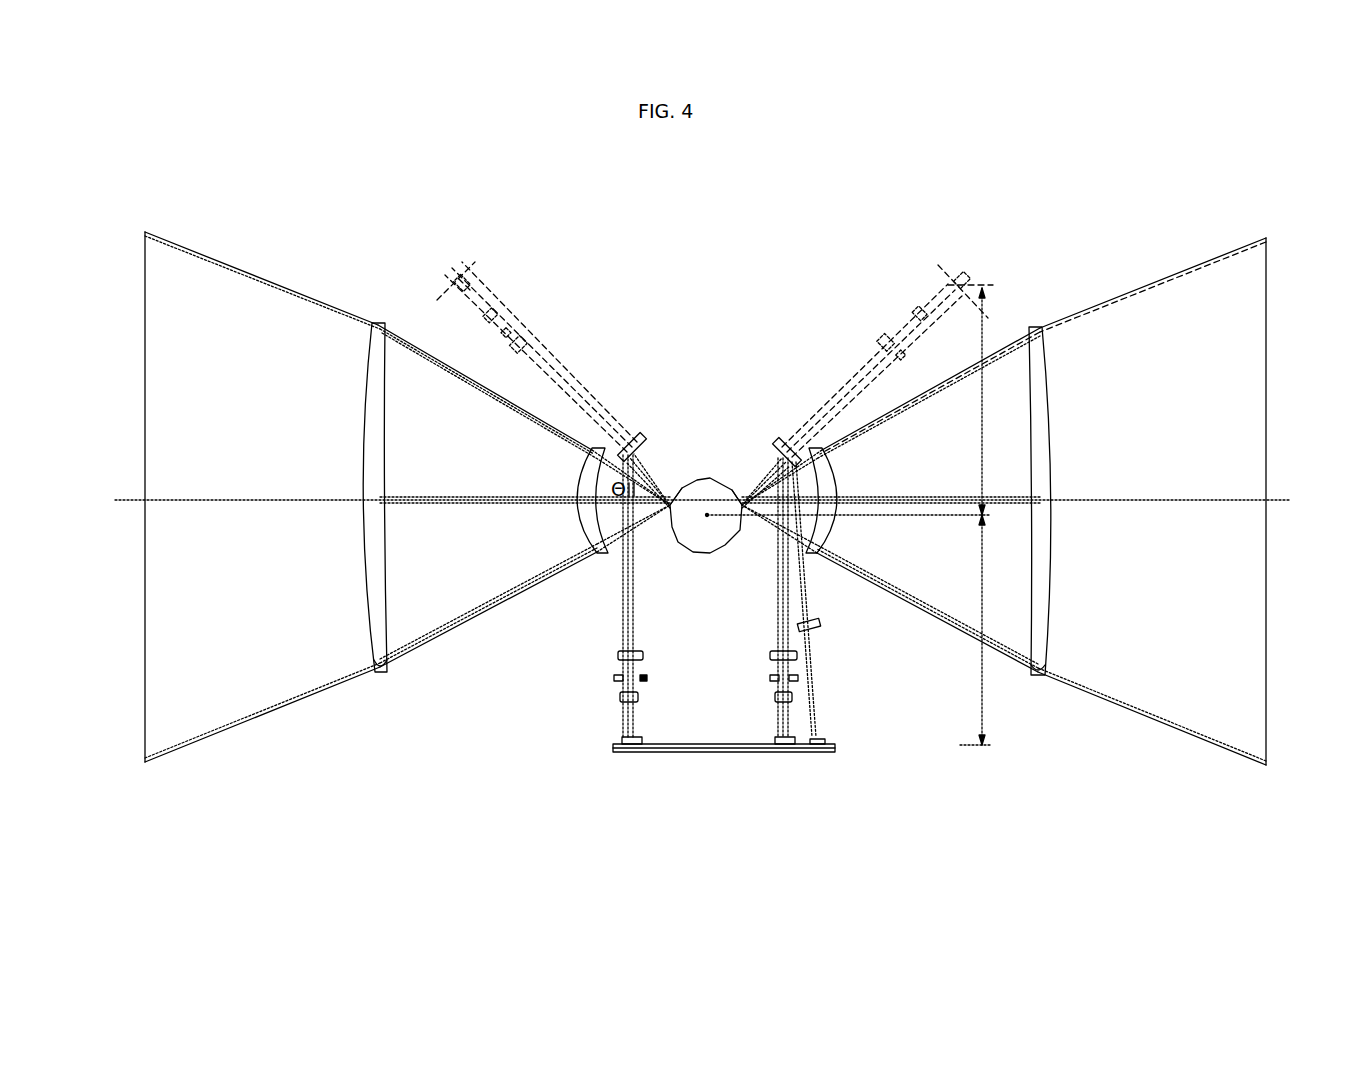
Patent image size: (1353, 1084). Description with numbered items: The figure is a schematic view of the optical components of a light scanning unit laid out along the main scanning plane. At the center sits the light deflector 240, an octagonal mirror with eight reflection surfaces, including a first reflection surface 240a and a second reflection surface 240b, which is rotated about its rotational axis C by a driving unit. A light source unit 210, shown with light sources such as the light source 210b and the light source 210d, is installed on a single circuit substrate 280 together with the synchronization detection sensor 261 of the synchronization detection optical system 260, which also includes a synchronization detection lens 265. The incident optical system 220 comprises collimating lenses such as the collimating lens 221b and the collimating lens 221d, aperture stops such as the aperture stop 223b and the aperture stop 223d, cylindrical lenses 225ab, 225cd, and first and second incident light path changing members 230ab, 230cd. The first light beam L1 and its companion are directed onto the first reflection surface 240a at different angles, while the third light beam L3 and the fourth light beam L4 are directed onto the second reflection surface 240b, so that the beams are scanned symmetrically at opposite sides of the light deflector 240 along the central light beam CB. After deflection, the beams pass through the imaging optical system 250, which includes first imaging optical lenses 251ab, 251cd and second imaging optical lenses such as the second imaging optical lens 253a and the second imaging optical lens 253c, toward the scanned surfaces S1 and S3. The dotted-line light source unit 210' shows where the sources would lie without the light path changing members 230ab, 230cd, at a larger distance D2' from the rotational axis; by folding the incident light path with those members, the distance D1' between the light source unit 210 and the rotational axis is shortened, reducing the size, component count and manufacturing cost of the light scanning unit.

The light source unit 210 is at (660, 810).
The light source unit (without incident light path changing members) 210' is at (715, 342).
The second light source 210b is at (610, 738).
The fourth light source 210d is at (758, 753).
The incident optical system 220 is at (518, 732).
The collimating lens 221b is at (618, 697).
The collimating lens 221d is at (794, 697).
The aperture stop 223b is at (612, 678).
The aperture stop 223d is at (800, 678).
The cylindrical lens 225ab is at (616, 654).
The cylindrical lens 225cd is at (800, 655).
The first incident light path changing member 230ab is at (632, 440).
The second incident light path changing member 230cd is at (785, 440).
The light deflector 240 is at (700, 552).
The first reflection surface 240a is at (688, 482).
The second reflection surface 240b is at (736, 480).
The imaging optical system 250 is at (366, 752).
The first imaging optical lens 251ab is at (578, 462).
The first imaging optical lens 251cd is at (838, 470).
The second imaging optical lens 253a is at (380, 676).
The second imaging optical lens 253c is at (1036, 680).
The synchronization detection optical system 260 is at (880, 750).
The synchronization detection sensor 261 is at (822, 742).
The synchronization detection lens 265 is at (822, 625).
The circuit substrate 280 is at (690, 753).
The screen S1 is at (143, 742).
The screen S3 is at (1268, 742).
The central light beam CB is at (433, 492).
The first light beam L1 is at (280, 290).
The third light beam L3 is at (1113, 295).
The fourth light beam L4 is at (778, 620).
The distance between light source unit and rotational axis D1' is at (992, 630).
The distance between light source unit and rotational axis without path changing mem D2' is at (1001, 401).